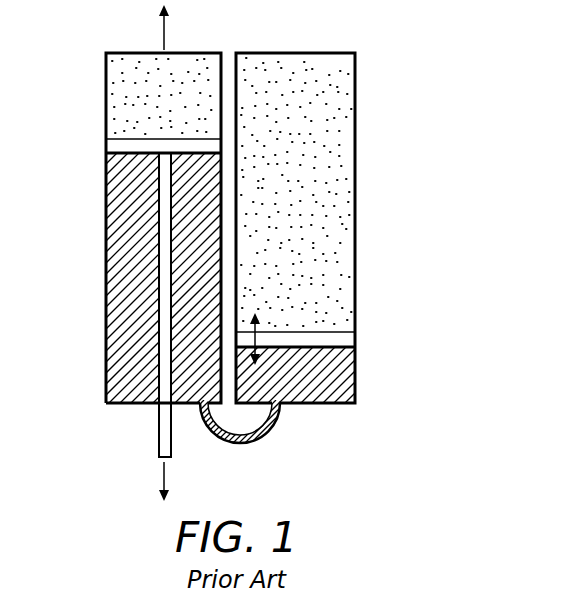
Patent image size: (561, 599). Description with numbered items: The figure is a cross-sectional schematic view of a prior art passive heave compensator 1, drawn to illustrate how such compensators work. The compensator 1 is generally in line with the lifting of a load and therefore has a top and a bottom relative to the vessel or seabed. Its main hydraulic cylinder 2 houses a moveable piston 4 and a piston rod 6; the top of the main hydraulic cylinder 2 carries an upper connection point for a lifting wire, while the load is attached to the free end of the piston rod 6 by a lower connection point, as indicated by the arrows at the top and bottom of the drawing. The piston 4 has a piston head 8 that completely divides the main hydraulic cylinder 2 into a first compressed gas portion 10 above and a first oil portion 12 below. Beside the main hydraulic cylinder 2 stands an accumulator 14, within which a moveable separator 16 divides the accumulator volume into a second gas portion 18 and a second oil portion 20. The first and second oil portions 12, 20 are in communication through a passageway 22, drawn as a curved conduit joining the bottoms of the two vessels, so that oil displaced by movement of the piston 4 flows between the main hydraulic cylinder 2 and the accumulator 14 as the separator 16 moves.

The passive heave compensator 1 is at (94, 39).
The main hydraulic cylinder 2 is at (106, 106).
The piston 4 is at (165, 310).
The piston rod 6 is at (158, 438).
The piston head 8 is at (117, 144).
The first compressed gas portion 10 is at (117, 72).
The first oil portion 12 is at (117, 210).
The accumulator 14 is at (356, 170).
The moveable separator 16 is at (344, 337).
The second gas portion 18 is at (344, 100).
The second oil portion 20 is at (344, 373).
The passageway 22 is at (244, 444).